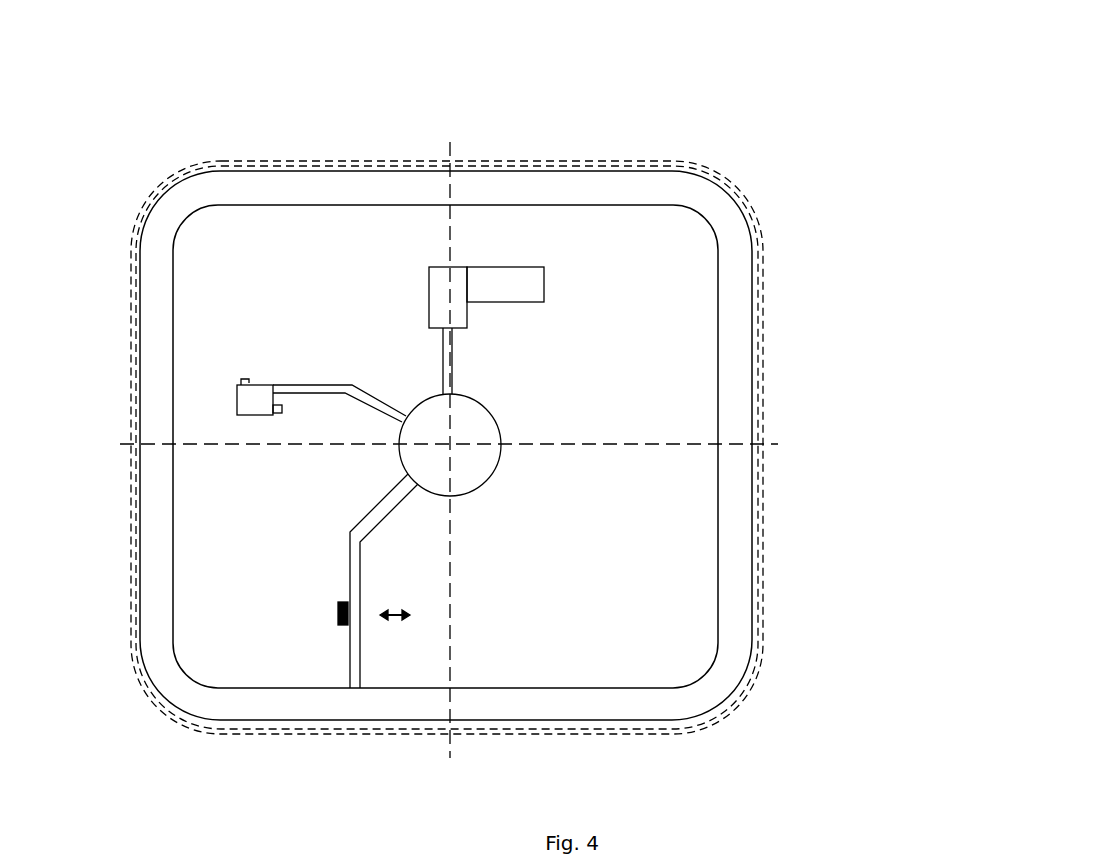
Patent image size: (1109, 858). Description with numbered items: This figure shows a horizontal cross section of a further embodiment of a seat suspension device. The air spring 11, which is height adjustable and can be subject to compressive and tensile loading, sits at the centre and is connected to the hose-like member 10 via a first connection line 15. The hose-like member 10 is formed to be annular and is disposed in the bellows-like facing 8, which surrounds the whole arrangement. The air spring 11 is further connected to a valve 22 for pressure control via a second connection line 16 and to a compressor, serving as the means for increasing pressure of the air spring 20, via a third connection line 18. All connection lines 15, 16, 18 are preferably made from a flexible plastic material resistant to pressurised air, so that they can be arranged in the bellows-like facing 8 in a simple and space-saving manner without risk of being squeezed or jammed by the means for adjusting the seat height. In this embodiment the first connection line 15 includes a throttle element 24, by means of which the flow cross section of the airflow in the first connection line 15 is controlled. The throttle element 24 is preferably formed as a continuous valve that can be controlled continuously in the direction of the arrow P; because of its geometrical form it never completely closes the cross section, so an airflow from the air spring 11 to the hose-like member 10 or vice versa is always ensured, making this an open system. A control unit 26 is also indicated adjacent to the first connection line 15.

The bellows-like facing 8 is at (677, 163).
The hose-like member 10 is at (530, 445).
The air spring 11 is at (662, 502).
The first connection line 15 is at (356, 577).
The second connection line 16 is at (310, 246).
The third connection line 18 is at (405, 219).
The means for increasing pressure of the air spring 20 is at (490, 260).
The valve 22 is at (181, 362).
The throttle element 24 is at (332, 707).
The control unit 26 is at (236, 706).